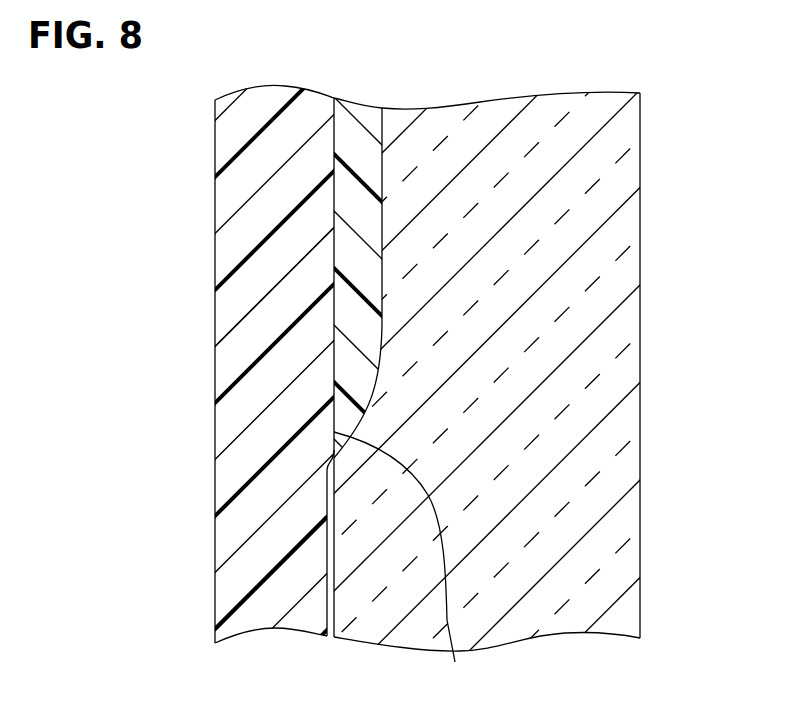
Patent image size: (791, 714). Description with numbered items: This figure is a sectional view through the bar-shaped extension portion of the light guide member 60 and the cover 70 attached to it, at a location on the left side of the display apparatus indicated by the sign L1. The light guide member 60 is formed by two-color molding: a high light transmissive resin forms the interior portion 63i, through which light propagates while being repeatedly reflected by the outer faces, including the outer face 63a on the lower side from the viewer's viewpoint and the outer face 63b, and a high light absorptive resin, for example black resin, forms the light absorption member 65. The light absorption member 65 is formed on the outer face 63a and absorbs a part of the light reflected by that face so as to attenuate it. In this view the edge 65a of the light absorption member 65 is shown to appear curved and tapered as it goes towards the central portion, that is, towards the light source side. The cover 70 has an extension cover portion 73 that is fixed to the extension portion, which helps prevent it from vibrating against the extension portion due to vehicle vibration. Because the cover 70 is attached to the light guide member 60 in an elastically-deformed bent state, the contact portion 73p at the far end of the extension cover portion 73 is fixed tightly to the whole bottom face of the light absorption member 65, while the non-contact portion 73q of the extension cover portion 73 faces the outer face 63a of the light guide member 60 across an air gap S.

The light guide member 60 is at (501, 357).
The outer face 63a is at (377, 162).
The outer face 63b is at (641, 353).
The interior portion 63i is at (572, 418).
The light absorption member 65 is at (350, 203).
The edge 65a is at (409, 561).
The cover 70 is at (255, 357).
The extension cover portion 73 is at (215, 519).
The contact portion 73p is at (257, 326).
The non-contact portion 73q is at (256, 608).
The position in the left direction L1 is at (183, 466).
The air gap S is at (327, 638).